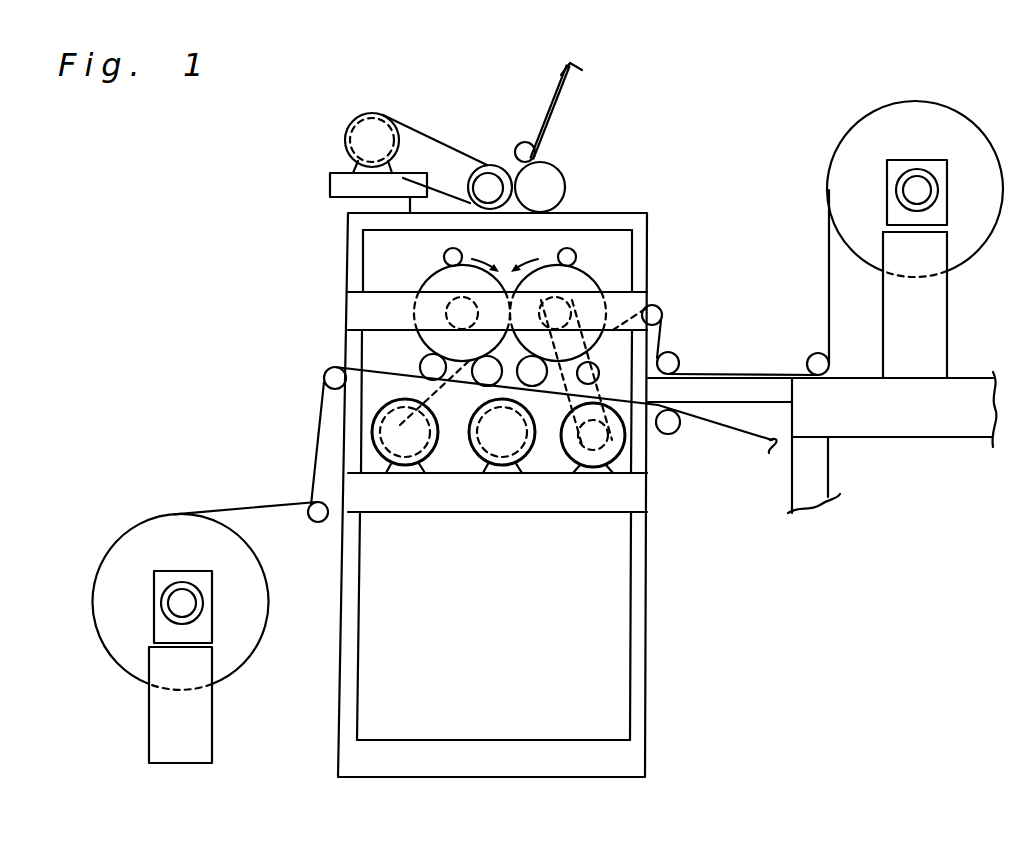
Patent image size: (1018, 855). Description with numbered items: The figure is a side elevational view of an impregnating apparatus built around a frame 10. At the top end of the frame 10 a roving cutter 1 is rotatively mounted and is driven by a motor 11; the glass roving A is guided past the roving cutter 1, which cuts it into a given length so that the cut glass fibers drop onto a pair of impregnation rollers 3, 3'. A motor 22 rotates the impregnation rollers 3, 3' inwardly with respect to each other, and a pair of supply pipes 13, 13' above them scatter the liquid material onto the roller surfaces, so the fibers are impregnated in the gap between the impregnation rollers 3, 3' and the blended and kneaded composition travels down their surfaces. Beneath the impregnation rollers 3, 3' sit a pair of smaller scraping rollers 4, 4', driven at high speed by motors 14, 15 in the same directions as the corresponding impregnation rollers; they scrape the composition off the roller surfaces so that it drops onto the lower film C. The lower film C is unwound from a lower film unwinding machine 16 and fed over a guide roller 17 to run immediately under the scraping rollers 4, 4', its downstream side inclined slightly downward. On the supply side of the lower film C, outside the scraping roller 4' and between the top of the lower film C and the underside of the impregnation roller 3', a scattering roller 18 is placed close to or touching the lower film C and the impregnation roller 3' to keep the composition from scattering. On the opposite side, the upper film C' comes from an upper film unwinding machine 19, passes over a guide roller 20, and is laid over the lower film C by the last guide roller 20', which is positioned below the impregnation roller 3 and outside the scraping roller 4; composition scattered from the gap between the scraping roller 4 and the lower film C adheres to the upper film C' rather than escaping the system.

The frame 10 is at (450, 111).
The roving cutter 1 is at (497, 163).
The glass roving A is at (572, 85).
The motor 11 is at (372, 140).
The supply pipe 13 is at (636, 224).
The supply pipe 13' is at (347, 241).
The impregnation roller 3 is at (616, 294).
The impregnation roller 3' is at (372, 313).
The scattering roller 18 is at (421, 360).
The guide roller 17 is at (324, 378).
The lower film C is at (476, 440).
The upper film C' is at (743, 282).
The guide roller 20 is at (735, 322).
The last guide roller 20' is at (701, 371).
The motor 22 is at (617, 443).
The motor 15 is at (393, 468).
The motor 14 is at (503, 468).
The scraping roller 4 is at (593, 471).
The scraping roller 4' is at (470, 474).
The lower film unwinding machine 16 is at (100, 638).
The upper film unwinding machine 19 is at (848, 132).